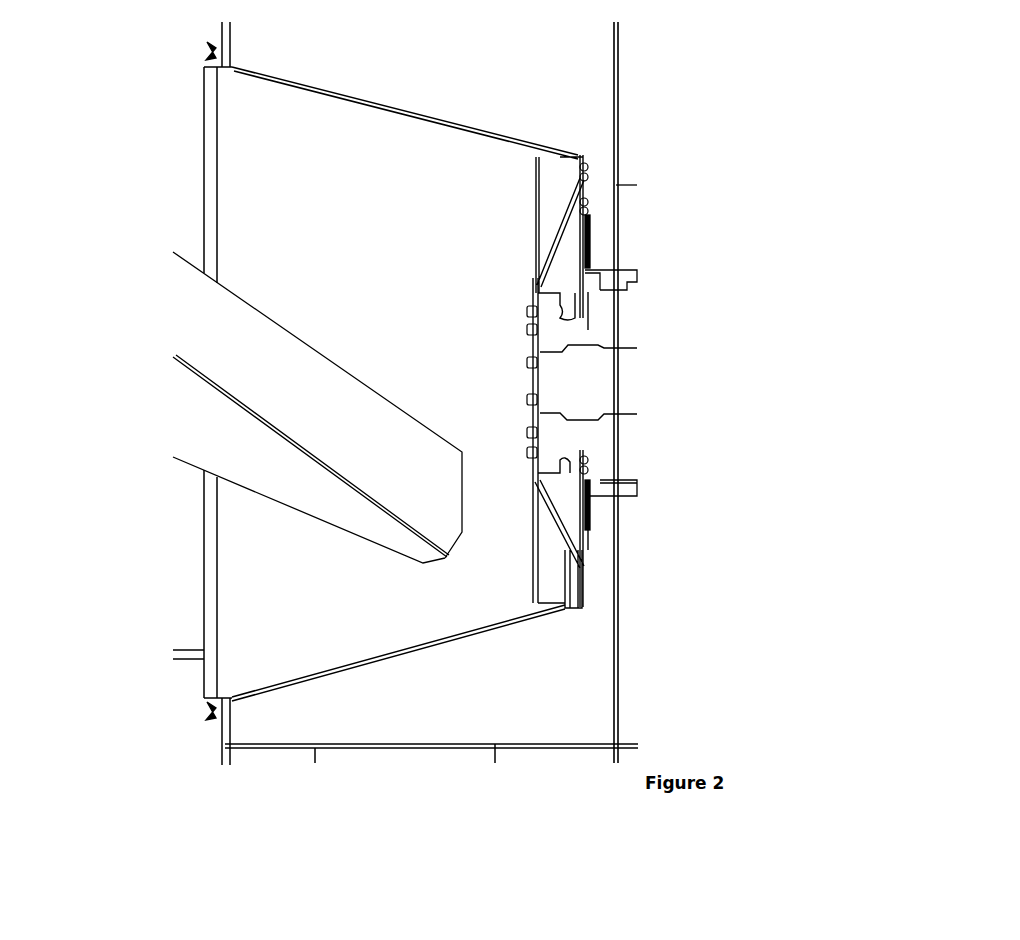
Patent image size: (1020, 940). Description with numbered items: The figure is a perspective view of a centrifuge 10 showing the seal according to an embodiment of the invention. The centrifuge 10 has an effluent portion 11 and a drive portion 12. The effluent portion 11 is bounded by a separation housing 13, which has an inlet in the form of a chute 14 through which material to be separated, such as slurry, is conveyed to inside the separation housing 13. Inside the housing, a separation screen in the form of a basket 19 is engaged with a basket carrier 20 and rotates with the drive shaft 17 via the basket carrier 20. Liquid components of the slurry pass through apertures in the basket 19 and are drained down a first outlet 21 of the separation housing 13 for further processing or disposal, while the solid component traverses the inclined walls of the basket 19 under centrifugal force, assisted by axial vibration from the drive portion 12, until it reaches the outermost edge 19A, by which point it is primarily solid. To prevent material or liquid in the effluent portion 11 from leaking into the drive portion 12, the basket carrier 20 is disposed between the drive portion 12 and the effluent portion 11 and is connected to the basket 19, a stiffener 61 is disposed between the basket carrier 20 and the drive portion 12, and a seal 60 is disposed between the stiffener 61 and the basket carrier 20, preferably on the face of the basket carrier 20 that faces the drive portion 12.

The centrifuge 10 is at (440, 407).
The effluent portion 11 is at (393, 86).
The drive portion 12 is at (668, 257).
The separation housing 13 is at (270, 740).
The chute 14 is at (230, 442).
The drive shaft 17 is at (615, 380).
The basket 19 is at (497, 623).
The outermost edge 19A is at (215, 583).
The basket carrier 20 is at (558, 245).
The first outlet 21 is at (432, 752).
The seal 60 is at (585, 213).
The stiffener 61 is at (590, 245).